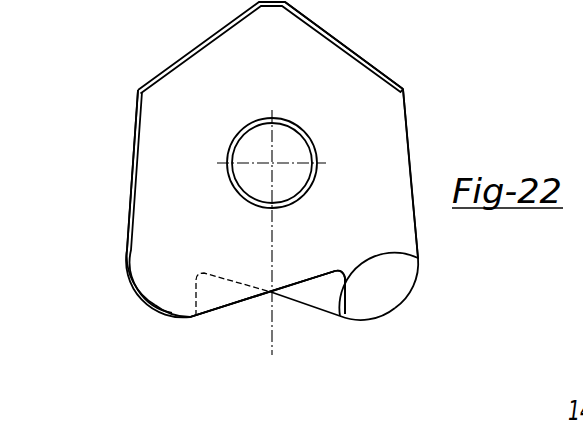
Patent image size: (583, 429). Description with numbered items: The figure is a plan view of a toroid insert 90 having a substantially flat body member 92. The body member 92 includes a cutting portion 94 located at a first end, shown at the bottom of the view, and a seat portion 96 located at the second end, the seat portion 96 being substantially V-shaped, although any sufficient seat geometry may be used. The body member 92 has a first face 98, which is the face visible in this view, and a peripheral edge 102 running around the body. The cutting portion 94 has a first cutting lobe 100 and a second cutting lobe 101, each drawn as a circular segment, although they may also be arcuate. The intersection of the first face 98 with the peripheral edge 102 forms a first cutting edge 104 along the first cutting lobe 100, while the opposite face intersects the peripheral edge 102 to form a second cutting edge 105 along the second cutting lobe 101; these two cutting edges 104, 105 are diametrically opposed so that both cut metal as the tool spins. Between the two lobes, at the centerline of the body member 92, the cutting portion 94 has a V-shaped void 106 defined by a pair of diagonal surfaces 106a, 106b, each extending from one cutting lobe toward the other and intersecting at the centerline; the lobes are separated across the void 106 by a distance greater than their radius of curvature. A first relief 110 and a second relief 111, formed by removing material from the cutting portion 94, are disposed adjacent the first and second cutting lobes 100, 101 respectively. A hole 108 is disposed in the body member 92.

The toroid insert 90 is at (432, 148).
The body member 92 is at (353, 215).
The cutting portion 94 is at (370, 285).
The seat portion 96 is at (330, 65).
The first face 98 is at (373, 133).
The first cutting lobe 100 is at (390, 262).
The second cutting lobe 101 is at (172, 282).
The peripheral edge 102 is at (130, 181).
The first cutting edge 104 is at (402, 295).
The second cutting edge 105 is at (126, 272).
The void 106 is at (272, 343).
The diagonal surface 106a is at (243, 300).
The diagonal surface 106b is at (322, 291).
The hole 108 is at (256, 140).
The first relief 110 is at (330, 297).
The second relief 111 is at (229, 288).